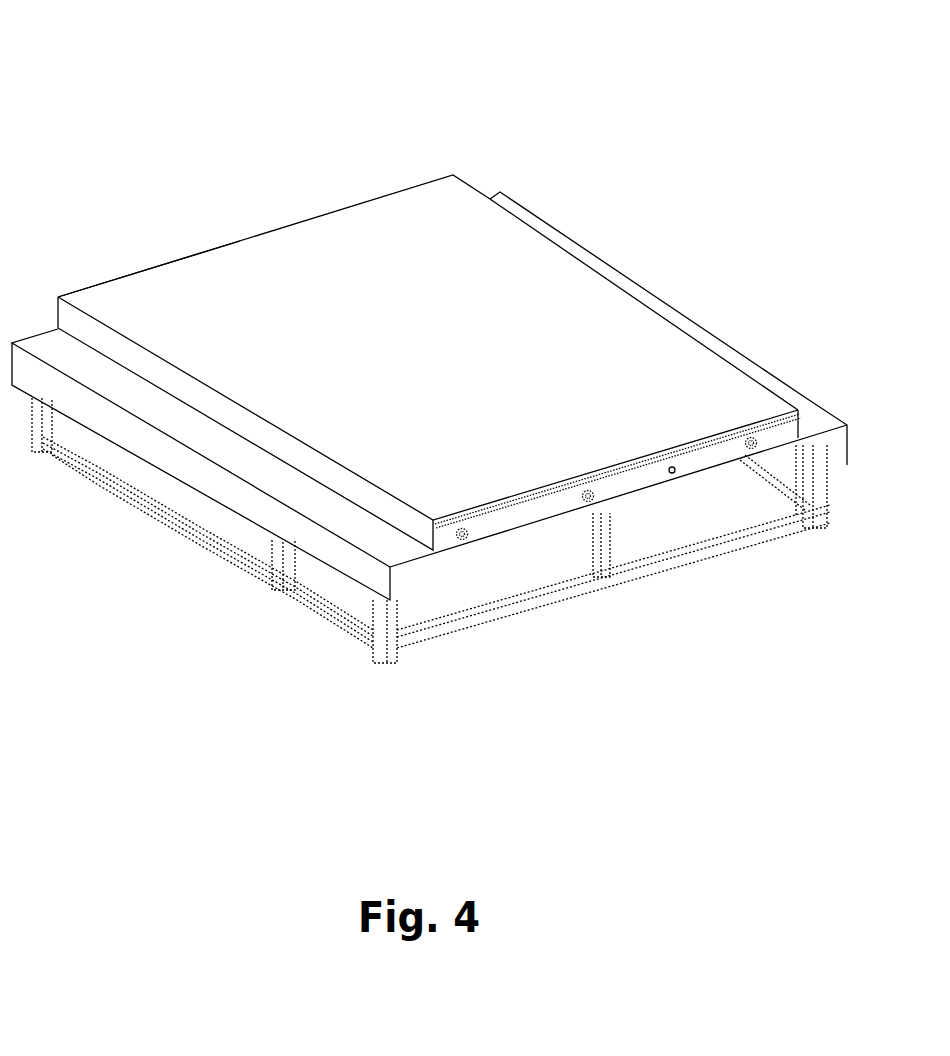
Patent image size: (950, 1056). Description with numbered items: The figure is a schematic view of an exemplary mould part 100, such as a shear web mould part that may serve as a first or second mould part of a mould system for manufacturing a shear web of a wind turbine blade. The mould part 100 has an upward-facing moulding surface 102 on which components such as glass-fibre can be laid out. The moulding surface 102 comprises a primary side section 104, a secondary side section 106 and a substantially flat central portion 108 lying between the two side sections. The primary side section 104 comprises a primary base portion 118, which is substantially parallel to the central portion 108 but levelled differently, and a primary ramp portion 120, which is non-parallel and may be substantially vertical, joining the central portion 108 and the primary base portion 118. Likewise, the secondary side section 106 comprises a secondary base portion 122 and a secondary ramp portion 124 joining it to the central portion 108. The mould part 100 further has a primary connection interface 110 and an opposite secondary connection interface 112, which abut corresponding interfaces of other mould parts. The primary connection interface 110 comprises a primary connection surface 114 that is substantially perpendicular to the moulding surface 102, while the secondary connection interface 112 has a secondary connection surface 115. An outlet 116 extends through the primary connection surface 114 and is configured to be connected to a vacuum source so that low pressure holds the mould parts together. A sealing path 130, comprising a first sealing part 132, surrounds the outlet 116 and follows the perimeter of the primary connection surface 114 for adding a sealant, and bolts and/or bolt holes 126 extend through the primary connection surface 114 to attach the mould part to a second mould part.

The mould part 100 is at (684, 95).
The moulding surface 102 is at (552, 205).
The primary side section 104 is at (235, 450).
The secondary side section 106 is at (697, 307).
The central portion 108 is at (577, 340).
The primary connection interface 110 is at (702, 497).
The secondary connection interface 112 is at (310, 212).
The primary connection surface 114 is at (652, 480).
The secondary connection surface 115 is at (133, 272).
The outlet 116 is at (671, 466).
The primary base portion 118 is at (280, 473).
The primary ramp portion 120 is at (380, 502).
The secondary base portion 122 is at (742, 360).
The secondary ramp portion 124 is at (803, 423).
The bolt holes 126 is at (462, 522).
The sealing path 130 is at (780, 430).
The first sealing part 132 is at (535, 497).